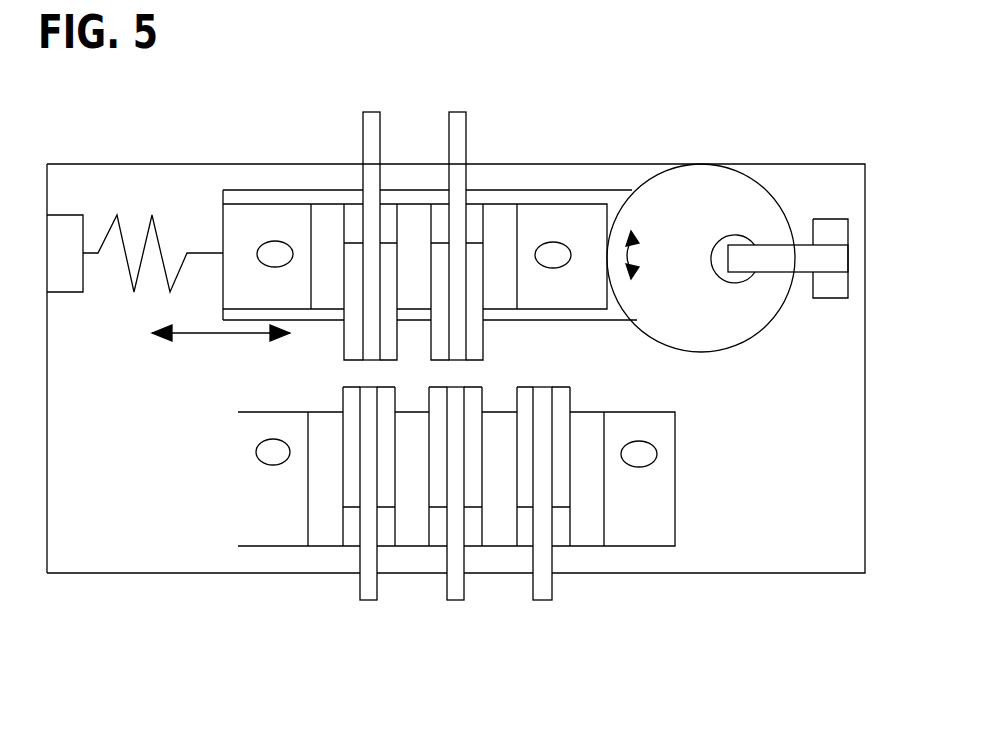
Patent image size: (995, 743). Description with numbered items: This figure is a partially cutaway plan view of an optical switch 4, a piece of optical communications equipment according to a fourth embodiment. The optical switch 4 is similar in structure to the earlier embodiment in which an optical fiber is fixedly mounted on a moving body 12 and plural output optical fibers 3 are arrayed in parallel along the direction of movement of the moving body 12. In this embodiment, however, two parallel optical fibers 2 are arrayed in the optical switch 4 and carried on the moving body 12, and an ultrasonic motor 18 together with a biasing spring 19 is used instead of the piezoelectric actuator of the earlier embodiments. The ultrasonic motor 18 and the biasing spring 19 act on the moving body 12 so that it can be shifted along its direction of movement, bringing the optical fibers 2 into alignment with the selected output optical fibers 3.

The optical switch 4 is at (263, 80).
The biasing spring 19 is at (123, 227).
The moving body 12 is at (572, 217).
The optical fiber 2 is at (375, 132).
The output optical fibers 3 is at (365, 592).
The ultrasonic motor 18 is at (712, 188).